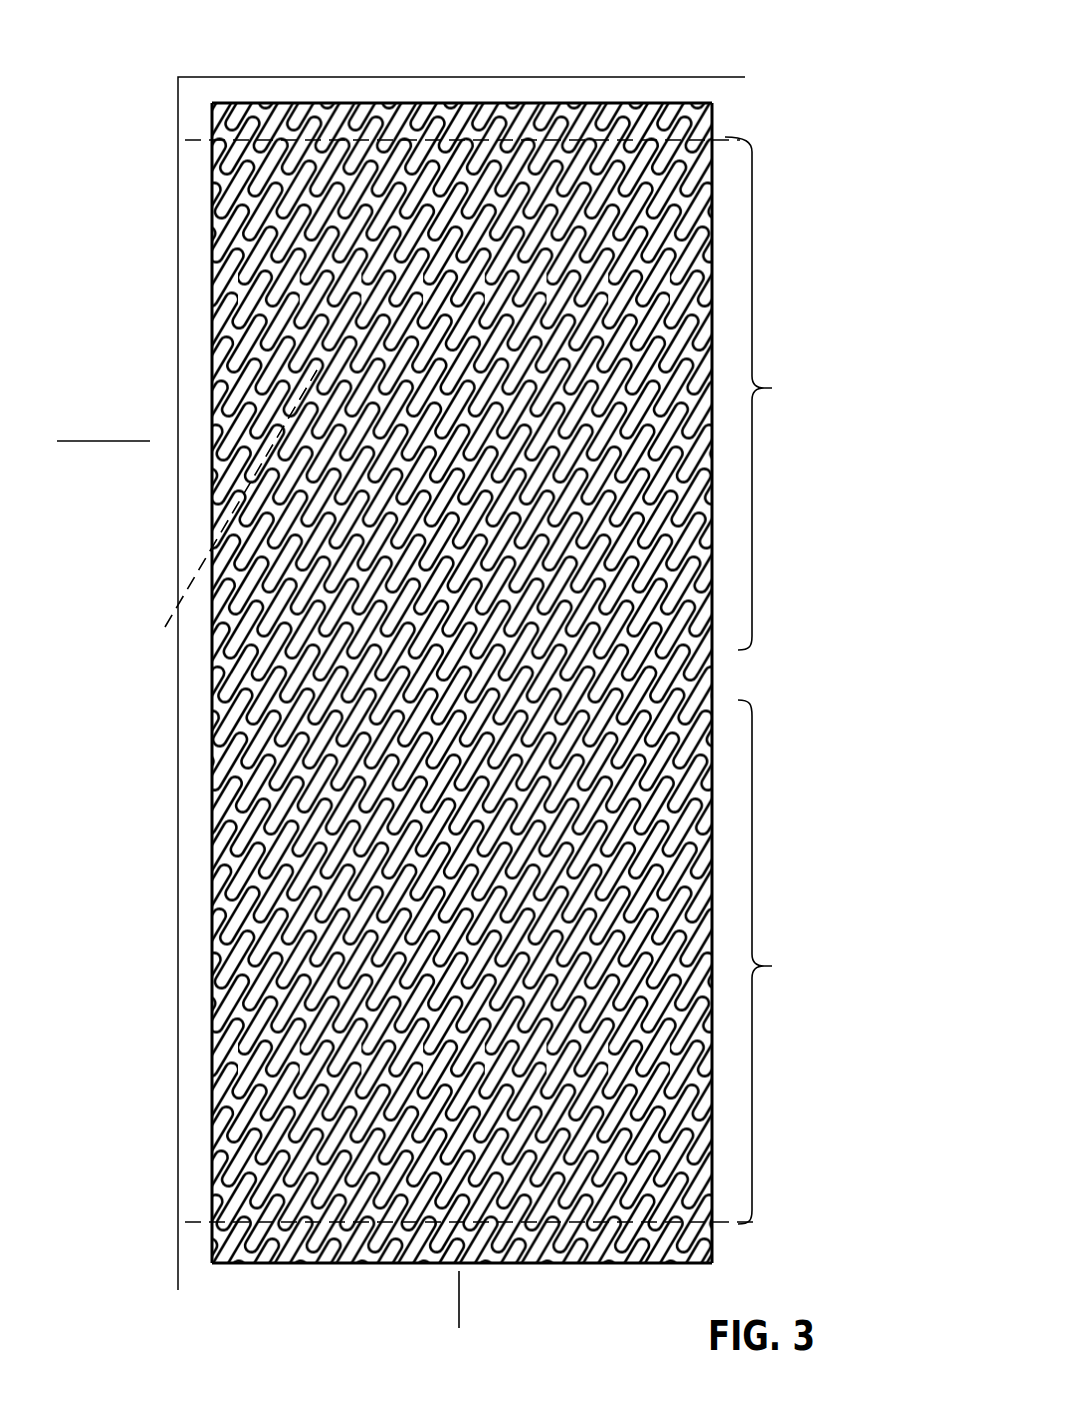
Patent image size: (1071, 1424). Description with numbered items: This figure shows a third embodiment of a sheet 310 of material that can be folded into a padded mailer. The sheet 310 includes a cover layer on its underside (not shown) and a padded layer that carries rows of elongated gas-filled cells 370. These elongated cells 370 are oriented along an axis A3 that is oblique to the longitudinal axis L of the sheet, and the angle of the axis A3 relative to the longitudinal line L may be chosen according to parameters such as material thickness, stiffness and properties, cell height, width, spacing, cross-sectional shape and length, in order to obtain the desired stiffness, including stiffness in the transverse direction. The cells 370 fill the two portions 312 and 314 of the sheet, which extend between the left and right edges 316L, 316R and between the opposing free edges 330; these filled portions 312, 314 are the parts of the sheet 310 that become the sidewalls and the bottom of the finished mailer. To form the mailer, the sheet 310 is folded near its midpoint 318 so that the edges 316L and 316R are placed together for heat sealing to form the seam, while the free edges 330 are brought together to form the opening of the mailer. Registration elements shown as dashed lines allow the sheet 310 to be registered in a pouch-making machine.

The sheet 310 is at (912, 36).
The portion 312 is at (769, 393).
The portion 314 is at (775, 962).
The edge 316L is at (212, 913).
The edge 316R is at (752, 142).
The midpoint 318 is at (185, 140).
The free edge 330 is at (290, 104).
The elongated gas-filled cell 370 is at (212, 731).
The axis A3 is at (227, 513).
The longitudinal axis L is at (459, 1313).